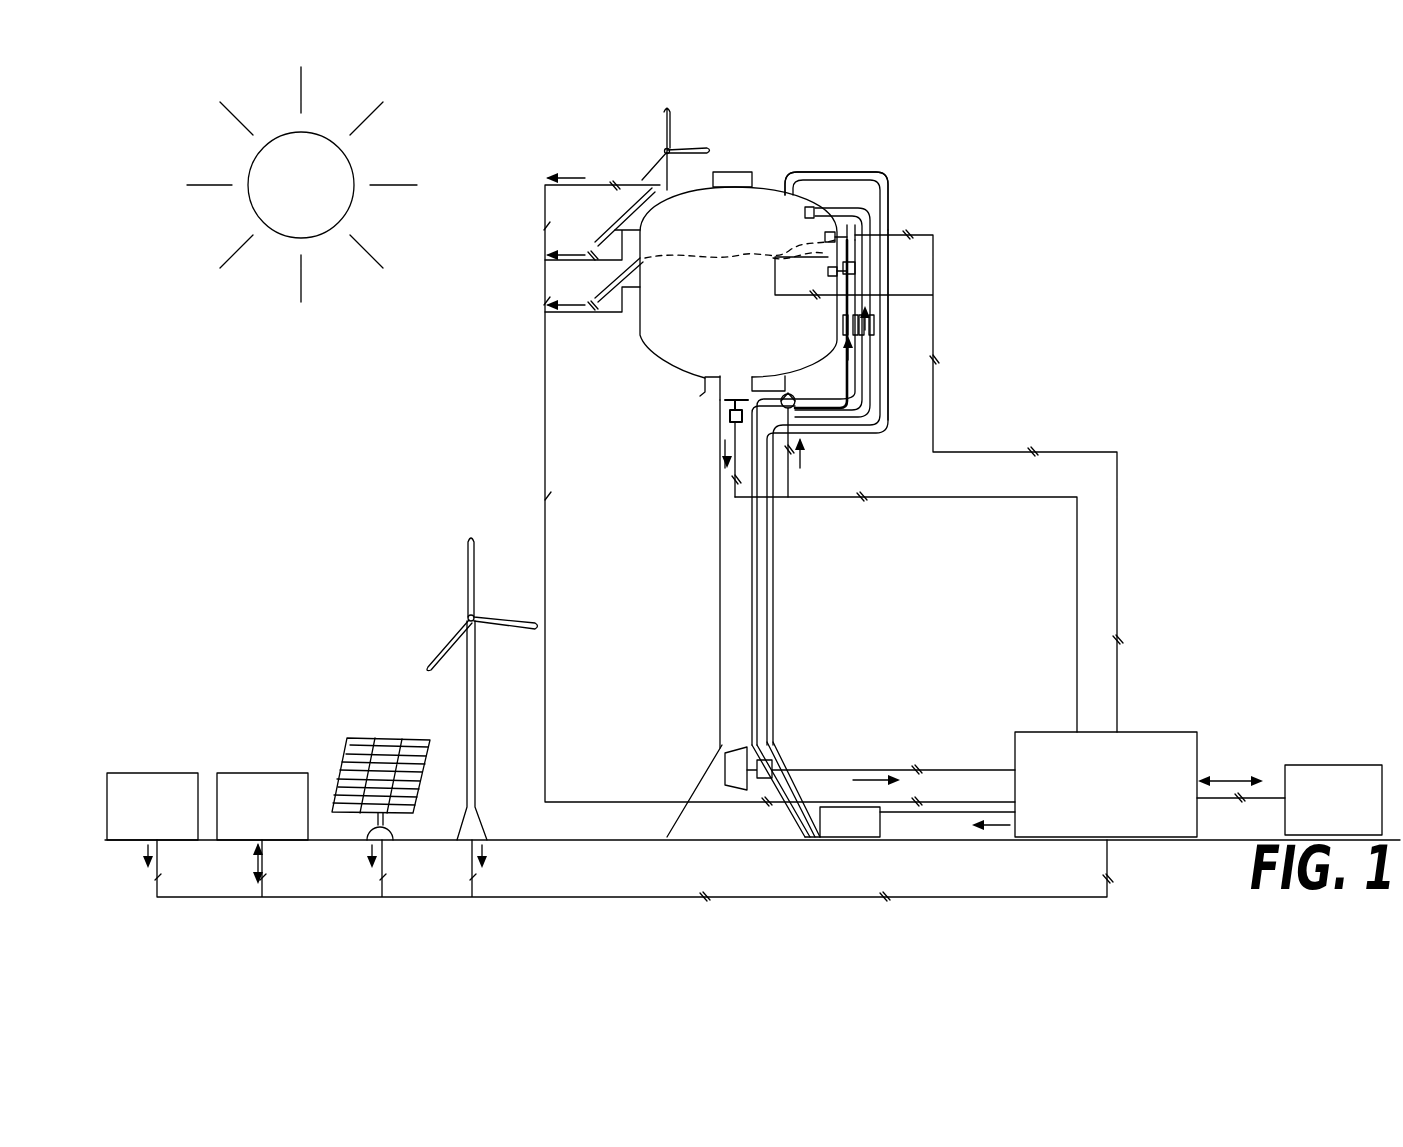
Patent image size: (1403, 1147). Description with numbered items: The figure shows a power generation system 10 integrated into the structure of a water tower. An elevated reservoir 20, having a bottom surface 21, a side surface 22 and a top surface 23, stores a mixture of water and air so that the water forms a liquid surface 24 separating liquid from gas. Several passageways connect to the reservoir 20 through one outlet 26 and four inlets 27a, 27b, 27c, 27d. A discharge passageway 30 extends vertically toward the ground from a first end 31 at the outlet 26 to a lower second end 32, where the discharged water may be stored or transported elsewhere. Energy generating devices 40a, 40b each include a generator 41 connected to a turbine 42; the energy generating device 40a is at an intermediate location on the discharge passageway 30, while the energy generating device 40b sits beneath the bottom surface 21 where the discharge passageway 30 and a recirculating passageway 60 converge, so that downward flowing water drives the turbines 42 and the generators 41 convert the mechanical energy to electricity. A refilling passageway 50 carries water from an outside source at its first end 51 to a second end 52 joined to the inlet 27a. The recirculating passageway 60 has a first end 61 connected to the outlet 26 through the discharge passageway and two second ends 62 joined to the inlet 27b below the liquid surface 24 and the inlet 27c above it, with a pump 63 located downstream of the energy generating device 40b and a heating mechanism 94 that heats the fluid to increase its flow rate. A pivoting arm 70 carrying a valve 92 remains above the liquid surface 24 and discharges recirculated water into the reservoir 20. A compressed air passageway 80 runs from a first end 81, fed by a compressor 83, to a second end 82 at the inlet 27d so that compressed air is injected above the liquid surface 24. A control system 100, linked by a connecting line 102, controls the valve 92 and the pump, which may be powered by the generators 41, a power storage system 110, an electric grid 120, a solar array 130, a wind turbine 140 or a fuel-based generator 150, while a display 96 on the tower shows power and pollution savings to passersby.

The power generation system 10 is at (1200, 226).
The reservoir 20 is at (640, 345).
The bottom surface 21 is at (720, 405).
The side surface 22 is at (630, 315).
The top surface 23 is at (765, 185).
The liquid surface 24 is at (655, 255).
The outlet 26 is at (725, 368).
The inlet 27a is at (805, 212).
The inlet 27b is at (852, 222).
The inlet 27c is at (828, 272).
The inlet 27d is at (785, 198).
The discharge passageway 30 is at (720, 548).
The first end 31 is at (752, 380).
The second end 32 is at (755, 830).
The energy generating device 40a is at (718, 755).
The energy generating device 40b is at (732, 436).
The generator 41 is at (725, 430).
The turbine 42 is at (725, 408).
The refilling passageway 50 is at (760, 585).
The first end 51 is at (812, 840).
The second end 52 is at (825, 210).
The recirculating passageway 60 is at (842, 360).
The first end 61 is at (775, 380).
The second end 62 is at (858, 255).
The pump 63 is at (795, 398).
The arm 70 is at (750, 268).
The compressed air passageway 80 is at (888, 212).
The first end 81 is at (812, 770).
The second end 82 is at (800, 170).
The compressor 83 is at (880, 818).
The valve 92 is at (778, 248).
The heating mechanism 94 is at (866, 338).
The display 96 is at (735, 170).
The control system 100 is at (1198, 740).
The connecting line 102 is at (1072, 435).
The power storage system 110 is at (270, 772).
The electric grid 120 is at (1338, 765).
The solar array 130 is at (615, 217).
The wind turbine 140 is at (660, 130).
The fuel-based generator 150 is at (150, 772).